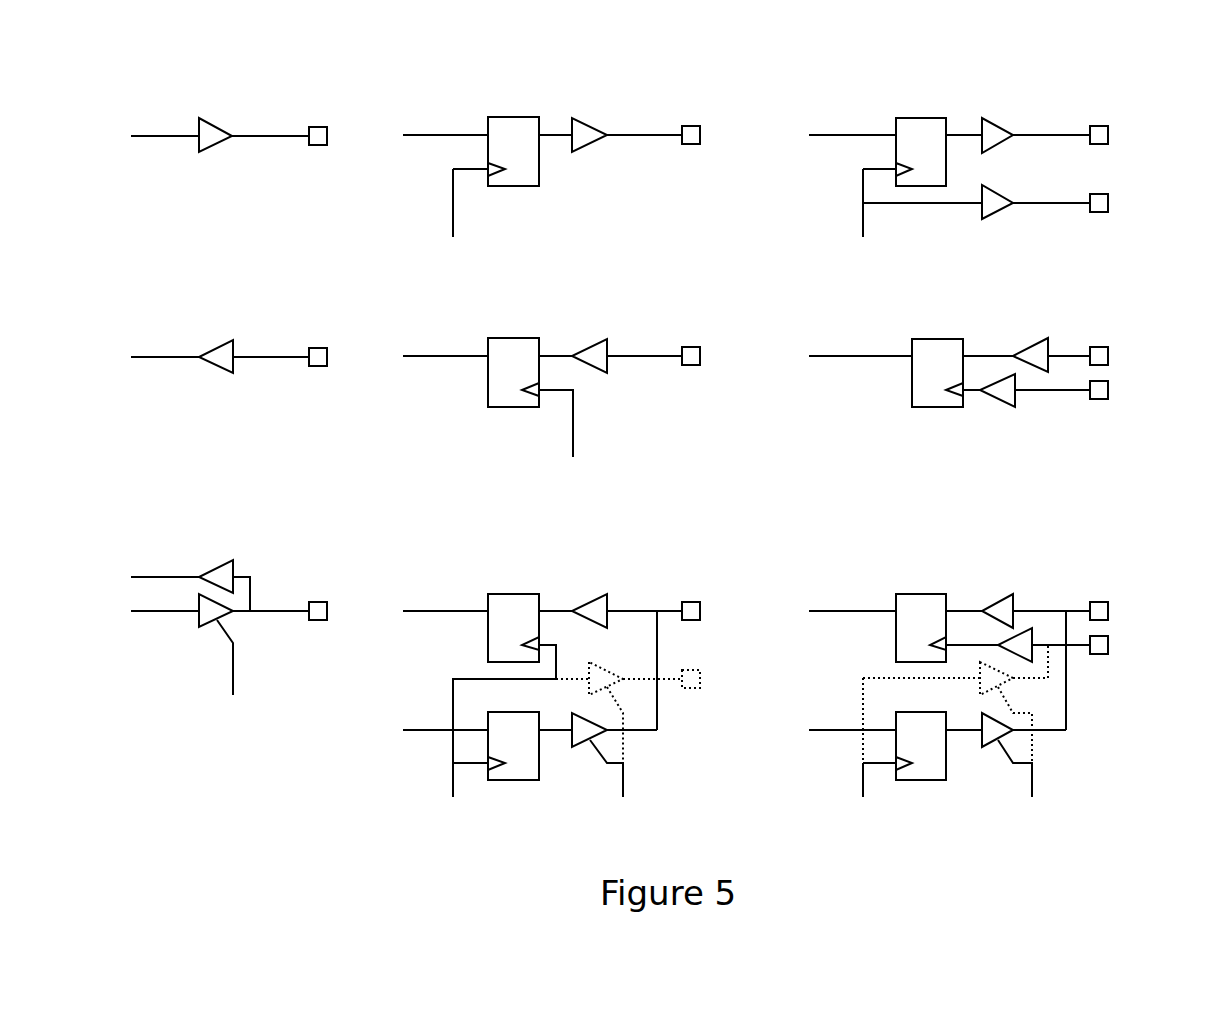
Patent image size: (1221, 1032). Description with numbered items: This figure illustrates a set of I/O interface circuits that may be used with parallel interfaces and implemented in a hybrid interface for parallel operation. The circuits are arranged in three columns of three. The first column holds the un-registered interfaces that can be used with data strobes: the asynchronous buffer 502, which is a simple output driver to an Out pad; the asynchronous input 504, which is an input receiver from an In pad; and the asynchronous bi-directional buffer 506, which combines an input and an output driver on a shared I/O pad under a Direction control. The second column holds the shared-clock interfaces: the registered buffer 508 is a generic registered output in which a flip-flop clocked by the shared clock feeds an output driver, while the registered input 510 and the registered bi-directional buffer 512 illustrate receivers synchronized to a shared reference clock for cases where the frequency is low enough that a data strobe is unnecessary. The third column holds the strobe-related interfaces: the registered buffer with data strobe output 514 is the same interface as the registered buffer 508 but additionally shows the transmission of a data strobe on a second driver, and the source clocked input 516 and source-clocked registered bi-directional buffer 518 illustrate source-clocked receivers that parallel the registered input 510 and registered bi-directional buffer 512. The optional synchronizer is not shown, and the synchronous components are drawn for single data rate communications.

The asynchronous buffer 502 is at (251, 106).
The asynchronous input 504 is at (243, 327).
The asynchronous bi-directional buffer 506 is at (247, 611).
The registered buffer 508 is at (562, 163).
The registered input 510 is at (566, 389).
The registered bi-directional buffer 512 is at (589, 680).
The registered buffer with data strobe output 514 is at (993, 158).
The source clocked input 516 is at (987, 372).
The source-clocked registered bi-directional buffer 518 is at (989, 674).